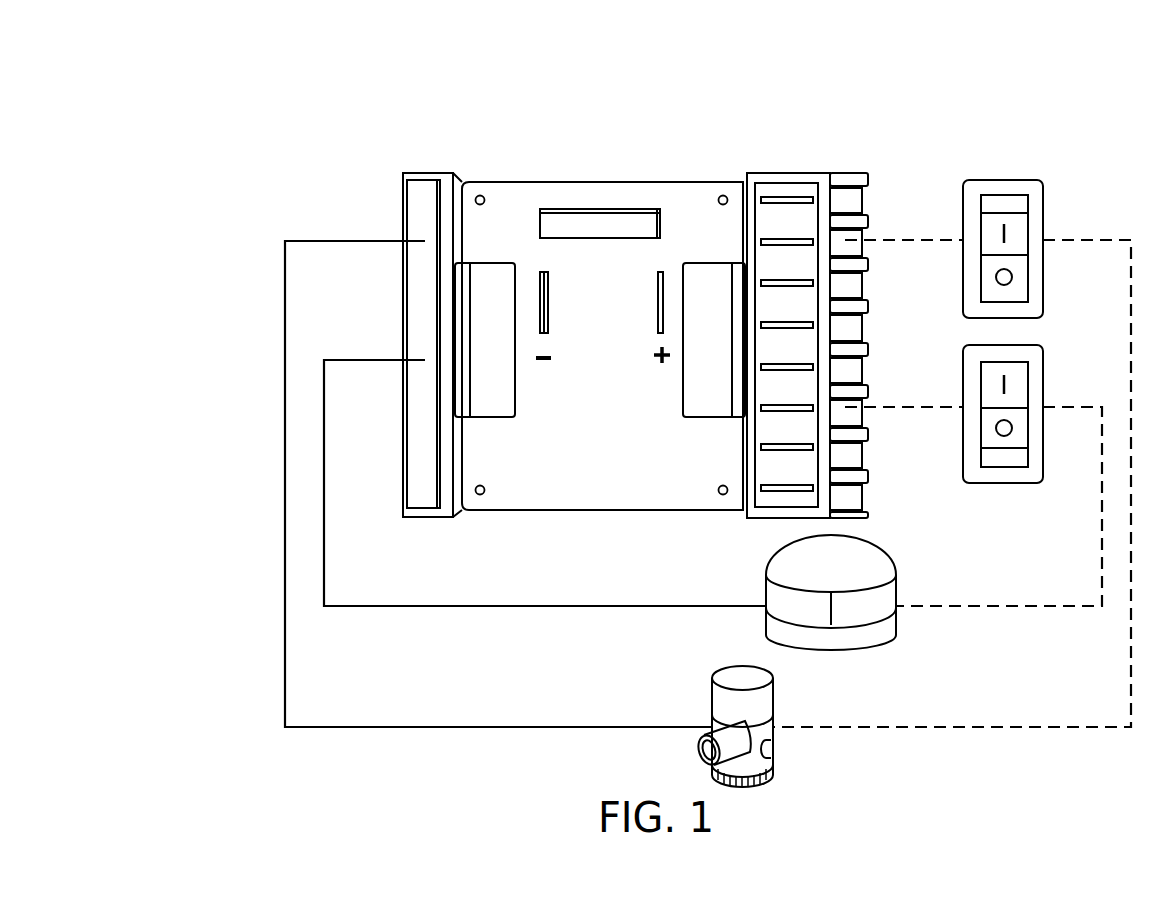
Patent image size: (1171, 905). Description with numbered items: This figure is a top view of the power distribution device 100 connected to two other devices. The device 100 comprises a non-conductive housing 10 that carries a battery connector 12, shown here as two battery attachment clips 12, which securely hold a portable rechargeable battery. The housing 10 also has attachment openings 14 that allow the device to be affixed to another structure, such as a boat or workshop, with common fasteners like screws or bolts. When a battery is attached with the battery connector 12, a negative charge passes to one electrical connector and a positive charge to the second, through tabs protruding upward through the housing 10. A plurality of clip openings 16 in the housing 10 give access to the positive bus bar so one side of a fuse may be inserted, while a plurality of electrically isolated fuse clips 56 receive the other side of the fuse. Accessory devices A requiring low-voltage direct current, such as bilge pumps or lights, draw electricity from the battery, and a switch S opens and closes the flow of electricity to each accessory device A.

The power distribution device 100 is at (850, 100).
The housing 10 is at (518, 218).
The battery connector 12 is at (485, 293).
The attachment openings 14 is at (483, 195).
The clip openings 16 is at (785, 282).
The fuse clips 56 is at (850, 203).
The switch S is at (1043, 208).
The accessory devices A is at (867, 615).